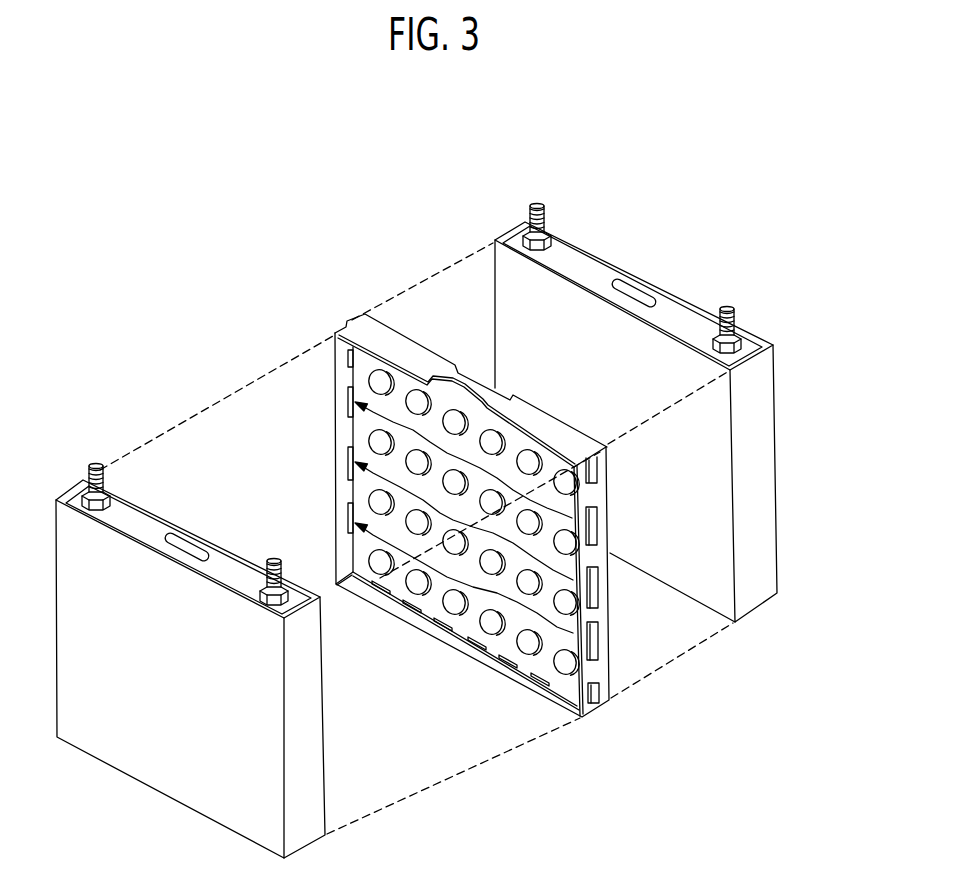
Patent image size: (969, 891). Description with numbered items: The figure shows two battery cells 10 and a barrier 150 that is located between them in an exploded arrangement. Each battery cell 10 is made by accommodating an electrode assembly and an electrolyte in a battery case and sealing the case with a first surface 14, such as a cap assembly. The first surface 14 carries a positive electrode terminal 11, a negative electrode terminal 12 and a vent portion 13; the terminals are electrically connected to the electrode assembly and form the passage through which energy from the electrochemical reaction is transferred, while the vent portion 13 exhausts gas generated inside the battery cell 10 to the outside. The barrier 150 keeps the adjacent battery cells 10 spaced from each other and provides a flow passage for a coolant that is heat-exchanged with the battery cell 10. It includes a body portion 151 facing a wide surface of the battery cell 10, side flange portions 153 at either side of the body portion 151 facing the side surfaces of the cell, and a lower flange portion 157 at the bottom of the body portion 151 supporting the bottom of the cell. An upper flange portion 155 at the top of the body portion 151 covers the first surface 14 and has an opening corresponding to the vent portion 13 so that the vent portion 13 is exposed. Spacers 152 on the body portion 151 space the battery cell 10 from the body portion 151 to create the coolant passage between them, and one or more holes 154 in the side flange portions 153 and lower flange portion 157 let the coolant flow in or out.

The battery cell 10 is at (450, 505).
The positive electrode terminal 11 is at (538, 204).
The negative electrode terminal 12 is at (727, 305).
The vent portion 13 is at (634, 291).
The first surface 14 is at (592, 265).
The barrier 150 is at (548, 499).
The body portion 151 is at (575, 522).
The spacers 152 is at (594, 578).
The side flange portions 153 is at (603, 468).
The holes 154 is at (603, 460).
The upper flange portion 155 is at (380, 333).
The lower flange portion 157 is at (462, 652).